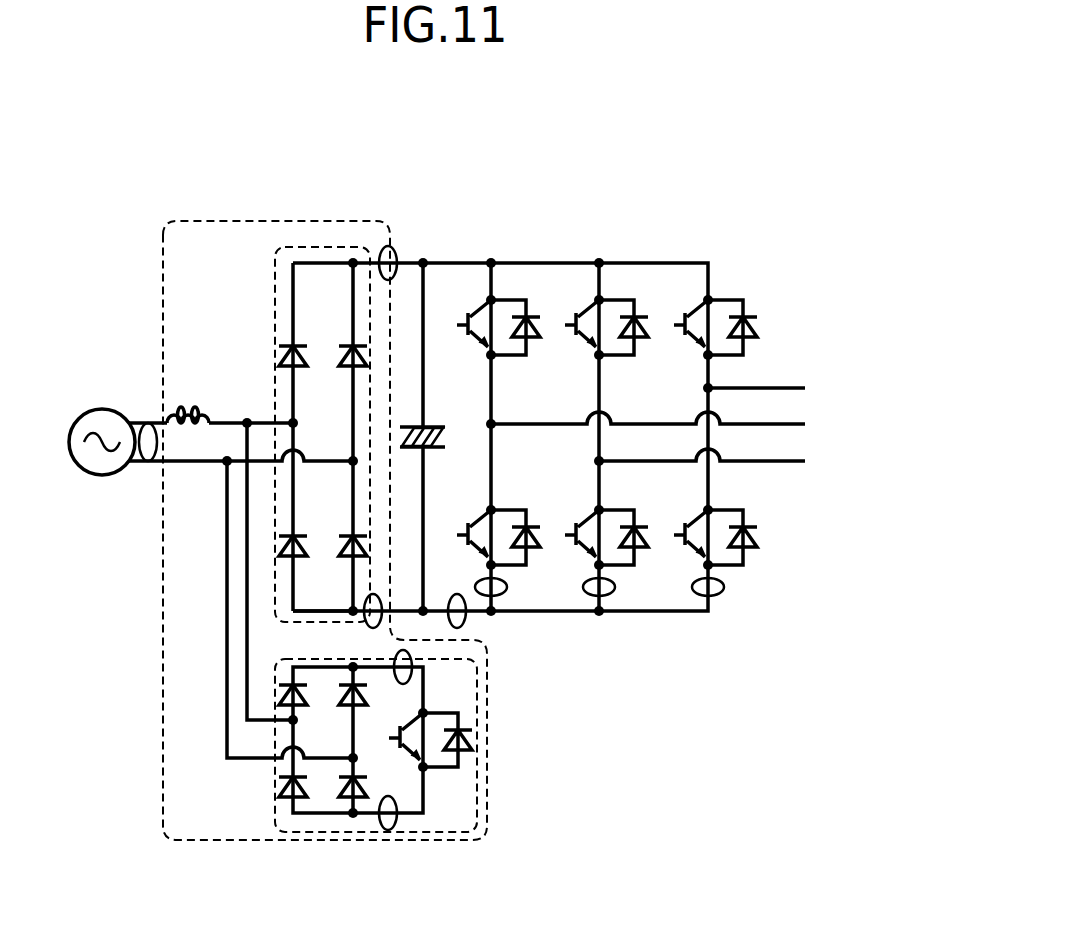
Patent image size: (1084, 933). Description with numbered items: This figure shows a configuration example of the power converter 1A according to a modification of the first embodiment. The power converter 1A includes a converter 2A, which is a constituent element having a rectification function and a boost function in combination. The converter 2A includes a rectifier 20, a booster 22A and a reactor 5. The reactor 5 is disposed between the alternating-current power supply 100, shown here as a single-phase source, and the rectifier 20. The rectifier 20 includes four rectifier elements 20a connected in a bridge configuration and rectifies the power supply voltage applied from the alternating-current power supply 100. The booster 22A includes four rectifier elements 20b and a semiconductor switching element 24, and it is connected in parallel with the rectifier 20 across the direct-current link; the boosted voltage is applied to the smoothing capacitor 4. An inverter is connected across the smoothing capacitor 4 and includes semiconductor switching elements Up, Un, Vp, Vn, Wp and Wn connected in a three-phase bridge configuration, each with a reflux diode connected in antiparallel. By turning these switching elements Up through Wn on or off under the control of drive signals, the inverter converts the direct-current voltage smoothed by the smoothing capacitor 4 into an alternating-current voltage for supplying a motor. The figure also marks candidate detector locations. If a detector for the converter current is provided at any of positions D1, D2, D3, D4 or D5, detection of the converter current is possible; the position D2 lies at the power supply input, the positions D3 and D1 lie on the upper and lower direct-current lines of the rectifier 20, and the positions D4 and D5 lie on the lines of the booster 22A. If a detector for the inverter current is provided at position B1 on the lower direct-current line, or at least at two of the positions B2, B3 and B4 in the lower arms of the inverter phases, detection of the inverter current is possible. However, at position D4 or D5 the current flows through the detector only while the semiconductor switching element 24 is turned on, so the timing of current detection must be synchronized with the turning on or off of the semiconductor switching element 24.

The power converter 1A is at (393, 137).
The converter 2A is at (213, 221).
The rectifier 20 is at (317, 247).
The rectifier element 20a is at (280, 337).
The rectifier element 20b is at (335, 806).
The booster 22A is at (462, 833).
The semiconductor switching element 24 is at (456, 783).
The smoothing capacitor 4 is at (415, 425).
The reactor 5 is at (188, 405).
The alternating-current power supply 100 is at (100, 408).
The position D1 is at (373, 595).
The position D2 is at (145, 462).
The position D3 is at (388, 245).
The position D4 is at (408, 682).
The position D5 is at (388, 830).
The position B1 is at (455, 593).
The position B2 is at (510, 613).
The position B3 is at (618, 613).
The position B4 is at (727, 613).
The semiconductor switching element Up is at (470, 350).
The semiconductor switching element Vp is at (578, 350).
The semiconductor switching element Wp is at (687, 350).
The semiconductor switching element Un is at (471, 509).
The semiconductor switching element Vn is at (579, 509).
The semiconductor switching element Wn is at (688, 509).